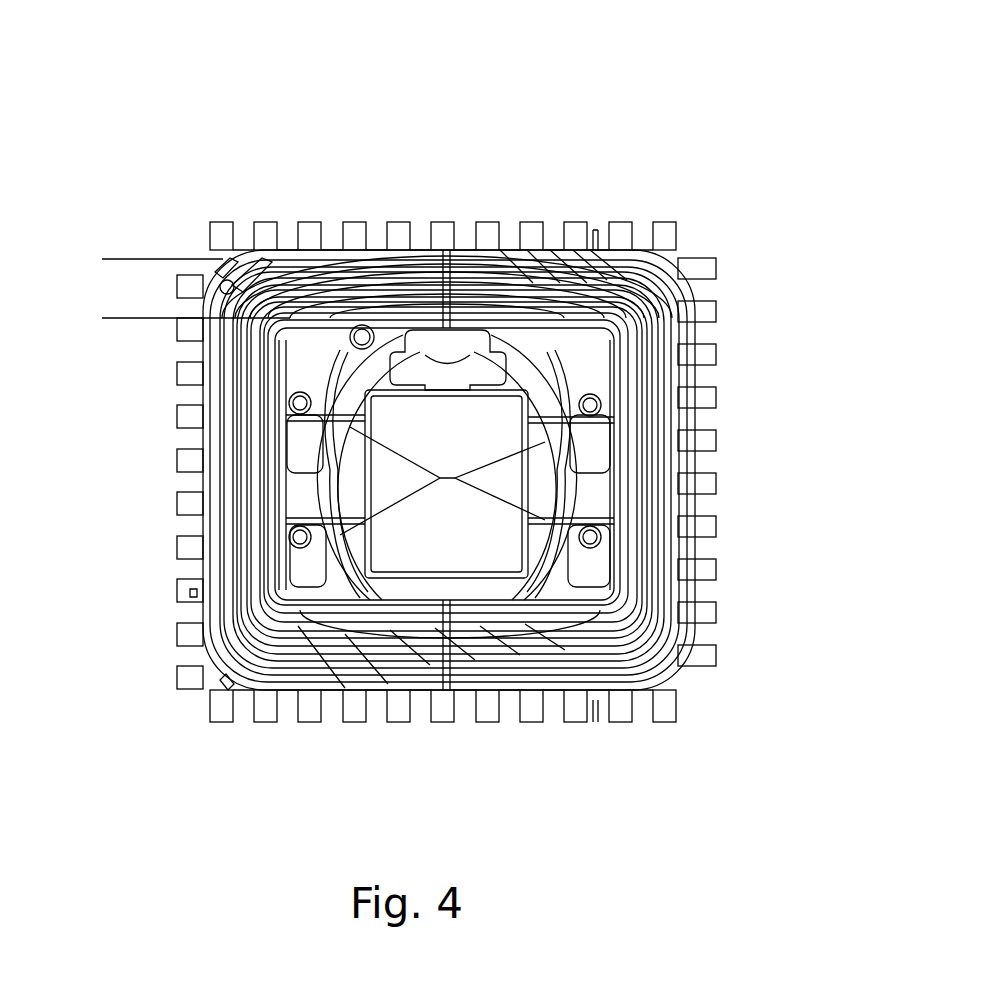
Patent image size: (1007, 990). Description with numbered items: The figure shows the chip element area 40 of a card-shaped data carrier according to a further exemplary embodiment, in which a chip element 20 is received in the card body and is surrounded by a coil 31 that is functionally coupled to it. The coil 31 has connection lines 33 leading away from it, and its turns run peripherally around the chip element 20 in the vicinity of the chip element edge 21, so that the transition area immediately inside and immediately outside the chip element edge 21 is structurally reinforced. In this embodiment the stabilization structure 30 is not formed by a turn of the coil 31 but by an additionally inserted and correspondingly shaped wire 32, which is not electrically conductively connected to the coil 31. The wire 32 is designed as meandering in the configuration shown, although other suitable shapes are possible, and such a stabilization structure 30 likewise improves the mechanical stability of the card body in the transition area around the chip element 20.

The chip element 20 is at (680, 262).
The chip element edge 21 is at (510, 244).
The stabilization structure 30 is at (403, 220).
The coil 31 is at (660, 470).
The wire 32 is at (174, 548).
The connection lines 33 is at (123, 254).
The chip element area 40 is at (601, 120).